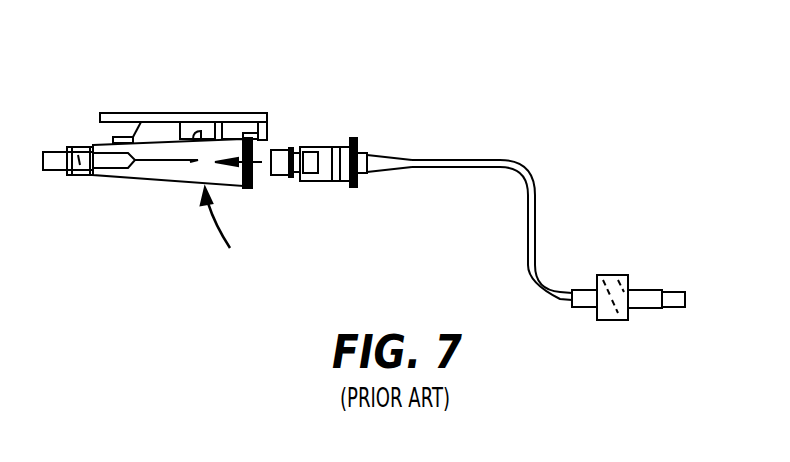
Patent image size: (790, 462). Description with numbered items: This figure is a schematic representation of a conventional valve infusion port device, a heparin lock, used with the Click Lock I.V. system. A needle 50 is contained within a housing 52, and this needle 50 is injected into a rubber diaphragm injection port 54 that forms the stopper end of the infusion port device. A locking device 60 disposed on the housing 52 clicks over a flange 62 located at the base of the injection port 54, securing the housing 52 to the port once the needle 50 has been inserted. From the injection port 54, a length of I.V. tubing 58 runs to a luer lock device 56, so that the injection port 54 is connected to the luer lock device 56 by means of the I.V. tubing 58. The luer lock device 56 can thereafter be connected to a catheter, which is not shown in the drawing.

The needle 50 is at (152, 160).
The housing 52 is at (228, 234).
The rubber diaphragm injection port 54 is at (273, 175).
The luer lock device 56 is at (645, 288).
The I.V. tubing 58 is at (450, 170).
The locking device 60 is at (232, 113).
The flange 62 is at (353, 138).